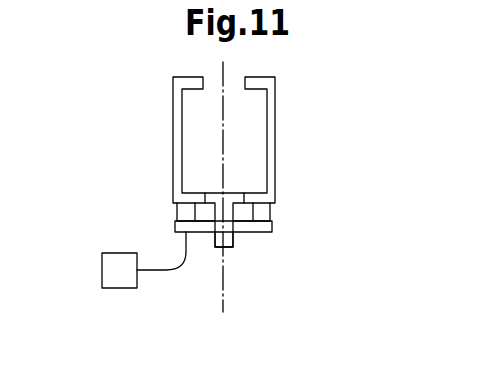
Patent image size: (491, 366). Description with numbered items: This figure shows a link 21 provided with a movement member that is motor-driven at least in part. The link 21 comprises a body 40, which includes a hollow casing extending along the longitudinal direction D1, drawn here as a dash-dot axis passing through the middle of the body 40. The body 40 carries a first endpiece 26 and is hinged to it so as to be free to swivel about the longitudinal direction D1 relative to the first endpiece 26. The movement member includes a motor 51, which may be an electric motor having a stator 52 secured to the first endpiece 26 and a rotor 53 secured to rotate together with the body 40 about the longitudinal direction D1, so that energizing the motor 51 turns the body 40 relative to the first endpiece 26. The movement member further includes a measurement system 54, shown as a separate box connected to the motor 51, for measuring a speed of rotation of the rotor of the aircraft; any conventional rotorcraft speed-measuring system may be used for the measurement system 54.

The link 21 is at (308, 160).
The body 40 is at (275, 105).
The motor 51 is at (278, 240).
The stator 52 is at (274, 226).
The rotor 53 is at (183, 213).
The measurement system 54 is at (102, 280).
The first endpiece 26 is at (220, 248).
The longitudinal direction D1 is at (225, 298).